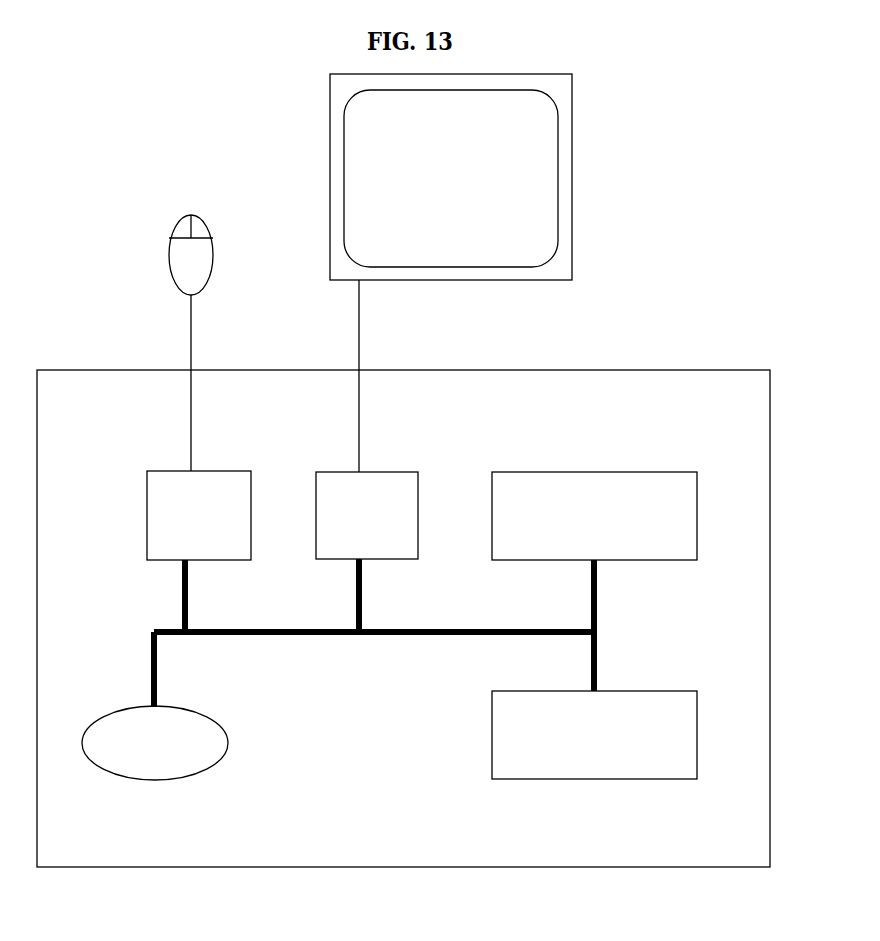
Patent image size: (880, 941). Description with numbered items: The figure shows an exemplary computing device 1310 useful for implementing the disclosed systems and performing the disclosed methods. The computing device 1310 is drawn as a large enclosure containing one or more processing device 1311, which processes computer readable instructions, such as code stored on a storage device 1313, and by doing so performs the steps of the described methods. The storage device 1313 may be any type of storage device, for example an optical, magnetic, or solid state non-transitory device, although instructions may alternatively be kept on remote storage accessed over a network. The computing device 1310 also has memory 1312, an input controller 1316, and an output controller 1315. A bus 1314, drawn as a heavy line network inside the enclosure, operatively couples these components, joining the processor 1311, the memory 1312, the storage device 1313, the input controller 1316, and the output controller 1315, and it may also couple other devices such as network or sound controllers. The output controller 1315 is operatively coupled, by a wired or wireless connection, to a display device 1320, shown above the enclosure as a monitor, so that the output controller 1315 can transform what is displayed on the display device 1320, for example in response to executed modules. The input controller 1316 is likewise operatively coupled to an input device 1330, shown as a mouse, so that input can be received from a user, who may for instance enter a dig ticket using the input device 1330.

The computing device 1310 is at (608, 370).
The processing device 1311 is at (625, 471).
The memory 1312 is at (630, 690).
The storage device 1313 is at (228, 745).
The bus 1314 is at (448, 631).
The output controller 1315 is at (393, 471).
The input controller 1316 is at (207, 471).
The display device 1320 is at (572, 218).
The input device 1330 is at (200, 216).